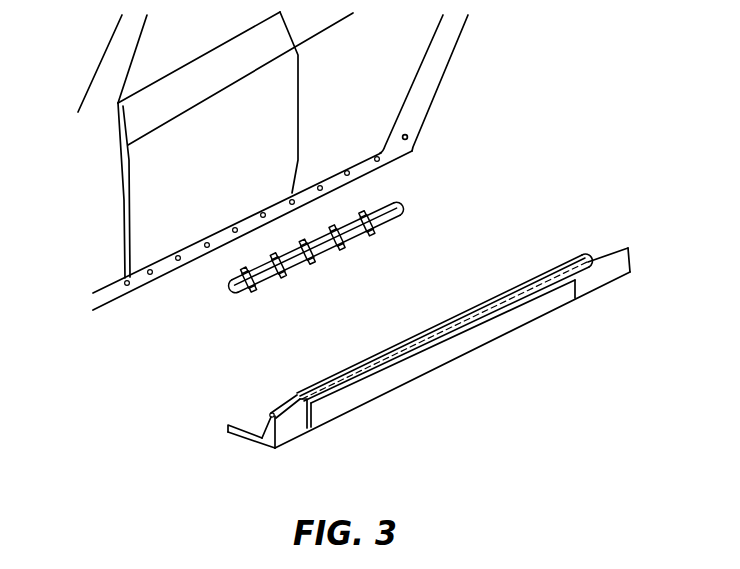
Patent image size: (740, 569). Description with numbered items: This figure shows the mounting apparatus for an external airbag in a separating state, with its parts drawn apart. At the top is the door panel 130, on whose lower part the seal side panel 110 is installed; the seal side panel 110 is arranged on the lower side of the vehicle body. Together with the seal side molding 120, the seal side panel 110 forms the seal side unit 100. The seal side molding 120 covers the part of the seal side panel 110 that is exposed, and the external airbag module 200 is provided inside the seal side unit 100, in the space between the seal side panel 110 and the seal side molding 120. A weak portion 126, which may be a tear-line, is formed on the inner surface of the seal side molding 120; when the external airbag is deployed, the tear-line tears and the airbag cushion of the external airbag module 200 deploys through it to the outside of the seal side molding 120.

The seal side unit 100 is at (240, 443).
The seal side panel 110 is at (138, 277).
The seal side molding 120 is at (288, 430).
The weak portion 126 is at (367, 380).
The door panel 130 is at (142, 180).
The external airbag module 200 is at (352, 253).